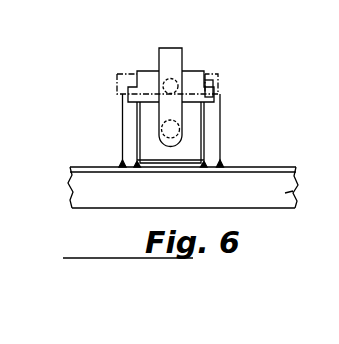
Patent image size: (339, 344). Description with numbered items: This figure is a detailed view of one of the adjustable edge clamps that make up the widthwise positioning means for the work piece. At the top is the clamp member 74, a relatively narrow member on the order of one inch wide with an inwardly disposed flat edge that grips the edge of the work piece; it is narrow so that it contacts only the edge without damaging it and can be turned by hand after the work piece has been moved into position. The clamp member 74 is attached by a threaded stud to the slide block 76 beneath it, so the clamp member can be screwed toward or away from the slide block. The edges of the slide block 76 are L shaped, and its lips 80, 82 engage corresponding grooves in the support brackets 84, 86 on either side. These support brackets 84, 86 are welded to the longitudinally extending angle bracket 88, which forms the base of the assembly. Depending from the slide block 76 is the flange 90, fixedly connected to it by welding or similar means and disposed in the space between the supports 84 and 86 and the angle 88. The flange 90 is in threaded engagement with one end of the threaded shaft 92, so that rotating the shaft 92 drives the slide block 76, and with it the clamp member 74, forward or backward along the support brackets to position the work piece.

The clamp member 74 is at (174, 60).
The slide block 76 is at (197, 80).
The lip 80 is at (119, 98).
The lip 82 is at (214, 95).
The support bracket 84 is at (127, 130).
The support bracket 86 is at (213, 118).
The angle bracket 88 is at (295, 172).
The flange 90 is at (190, 147).
The threaded shaft 92 is at (170, 140).